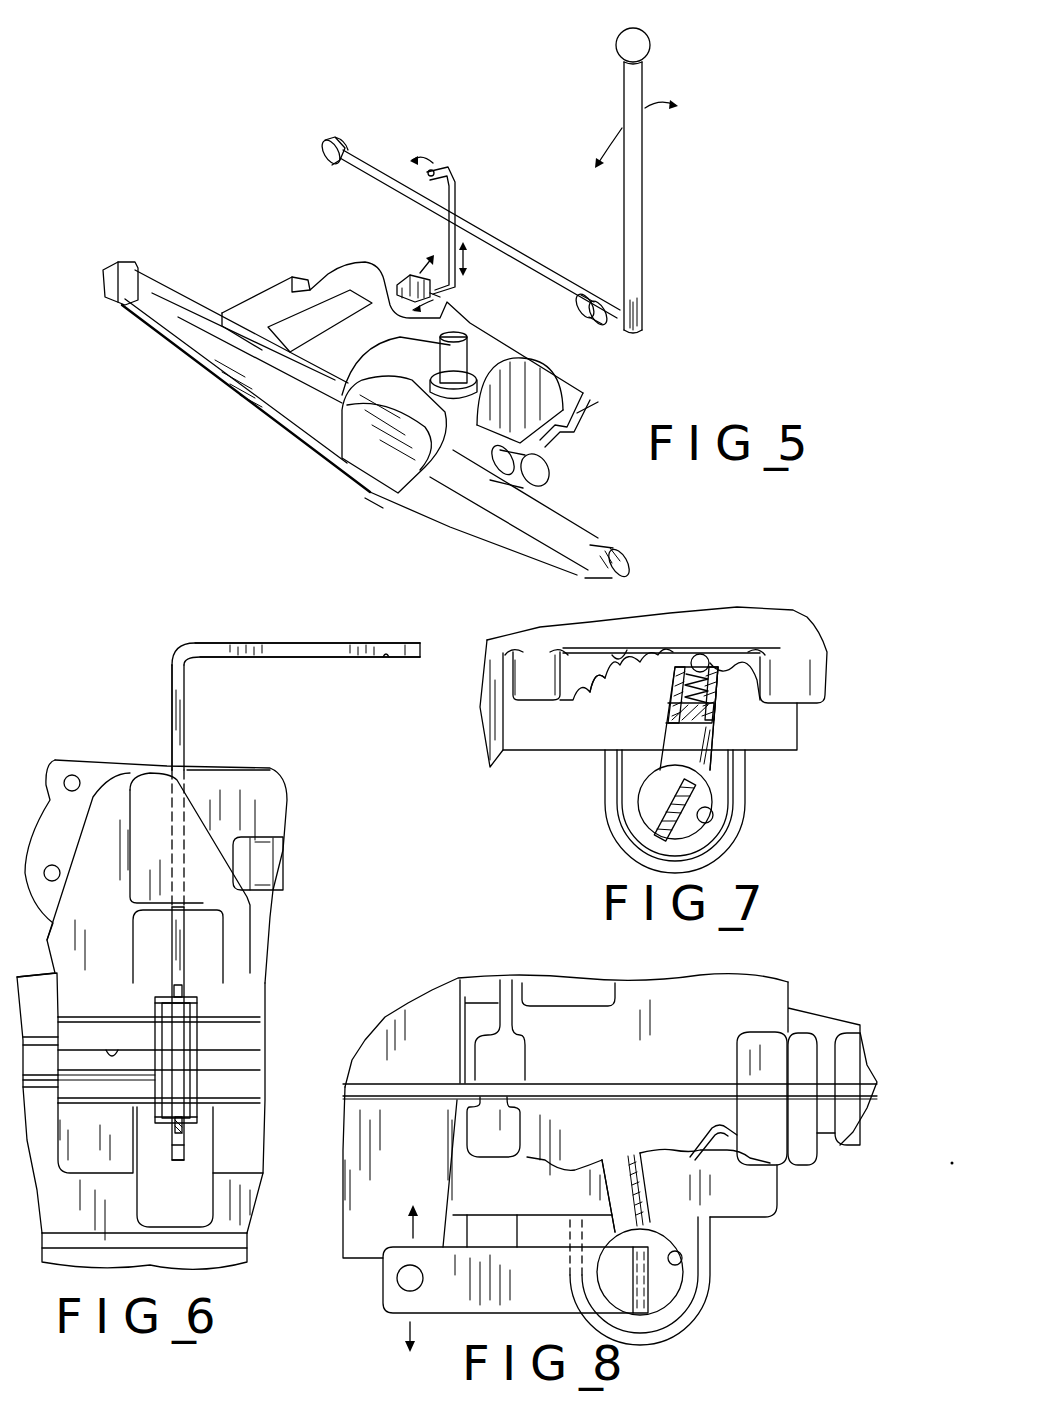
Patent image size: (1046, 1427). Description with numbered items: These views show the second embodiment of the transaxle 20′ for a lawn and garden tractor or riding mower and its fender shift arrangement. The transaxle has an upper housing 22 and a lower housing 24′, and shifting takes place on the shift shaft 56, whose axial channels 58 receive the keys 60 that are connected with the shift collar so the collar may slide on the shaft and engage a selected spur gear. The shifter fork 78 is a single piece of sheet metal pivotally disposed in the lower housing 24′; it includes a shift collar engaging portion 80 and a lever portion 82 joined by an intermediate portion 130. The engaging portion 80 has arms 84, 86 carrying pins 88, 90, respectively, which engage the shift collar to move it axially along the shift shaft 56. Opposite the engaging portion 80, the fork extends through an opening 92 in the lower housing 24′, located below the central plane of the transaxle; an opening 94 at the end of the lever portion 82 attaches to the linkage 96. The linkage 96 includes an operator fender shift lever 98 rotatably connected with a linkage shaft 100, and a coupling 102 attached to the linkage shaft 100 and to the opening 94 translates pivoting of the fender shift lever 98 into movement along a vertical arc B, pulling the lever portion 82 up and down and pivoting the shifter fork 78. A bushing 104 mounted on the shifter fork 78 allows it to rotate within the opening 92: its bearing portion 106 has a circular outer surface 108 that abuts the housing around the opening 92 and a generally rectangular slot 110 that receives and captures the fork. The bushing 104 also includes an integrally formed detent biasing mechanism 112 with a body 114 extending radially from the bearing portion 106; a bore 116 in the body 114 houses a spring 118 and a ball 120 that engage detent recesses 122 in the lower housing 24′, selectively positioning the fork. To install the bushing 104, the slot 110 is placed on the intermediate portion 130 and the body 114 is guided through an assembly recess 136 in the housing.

In FIG. 5, the transaxle 20′ is at (236, 403).
In FIG. 5, the upper housing 22 is at (563, 383).
In FIG. 8, the upper housing 22 is at (815, 1022).
In FIG. 5, the lower housing 24′ is at (578, 413).
In FIG. 6, the lower housing 24′ is at (77, 772).
In FIG. 7, the lower housing 24′ is at (828, 650).
In FIG. 8, the lower housing 24′ is at (803, 1155).
In FIG. 6, the shift shaft 56 is at (110, 1048).
In FIG. 6, the axial channels 58 is at (115, 1088).
In FIG. 6, the keys 60 is at (245, 1060).
In FIG. 8, the keys 60 is at (610, 1091).
In FIG. 5, the shifter fork 78 is at (404, 276).
In FIG. 6, the shifter fork 78 is at (188, 641).
In FIG. 7, the shifter fork 78 is at (650, 837).
In FIG. 8, the shifter fork 78 is at (538, 1315).
In FIG. 6, the shift collar engaging portion 80 is at (180, 958).
In FIG. 6, the lever portion 82 is at (362, 648).
In FIG. 8, the lever portion 82 is at (508, 1305).
In FIG. 6, the arm 84 is at (178, 1163).
In FIG. 6, the arm 86 is at (183, 985).
In FIG. 6, the pin 88 is at (184, 1128).
In FIG. 6, the pin 90 is at (199, 1025).
In FIG. 7, the opening 92 is at (713, 815).
In FIG. 8, the opening 92 is at (682, 1258).
In FIG. 6, the opening 94 is at (387, 660).
In FIG. 8, the opening 94 is at (400, 1280).
In FIG. 5, the linkage 96 is at (473, 183).
In FIG. 5, the operator fender shift lever 98 is at (644, 246).
In FIG. 5, the linkage shaft 100 is at (541, 266).
In FIG. 5, the coupling 102 is at (460, 213).
In FIG. 7, the bushing 104 is at (643, 762).
In FIG. 8, the bushing 104 is at (659, 1232).
In FIG. 7, the bearing portion 106 is at (643, 827).
In FIG. 8, the bearing portion 106 is at (684, 1284).
In FIG. 7, the circular outer surface 108 is at (636, 806).
In FIG. 8, the circular outer surface 108 is at (610, 1243).
In FIG. 7, the slot 110 is at (724, 852).
In FIG. 8, the slot 110 is at (652, 1303).
In FIG. 7, the detent biasing mechanism 112 is at (722, 732).
In FIG. 8, the detent biasing mechanism 112 is at (597, 1172).
In FIG. 7, the body 114 is at (668, 714).
In FIG. 7, the bore 116 is at (684, 680).
In FIG. 7, the spring 118 is at (712, 697).
In FIG. 7, the ball 120 is at (700, 654).
In FIG. 7, the detent recesses 122 is at (617, 662).
In FIG. 6, the intermediate portion 130 is at (172, 730).
In FIG. 8, the assembly recess 136 is at (700, 1140).
In FIG. 8, the vertical arc B is at (405, 1223).